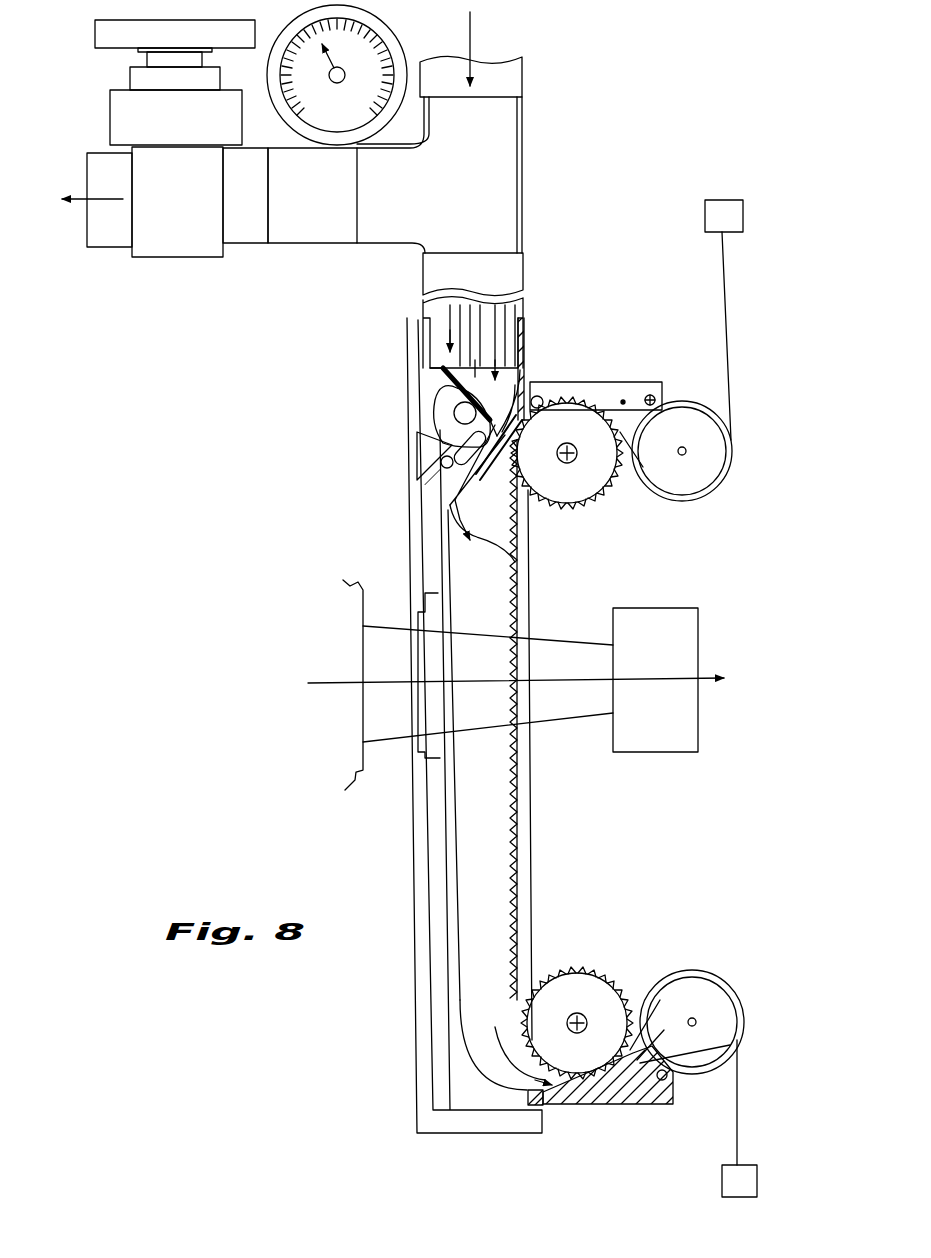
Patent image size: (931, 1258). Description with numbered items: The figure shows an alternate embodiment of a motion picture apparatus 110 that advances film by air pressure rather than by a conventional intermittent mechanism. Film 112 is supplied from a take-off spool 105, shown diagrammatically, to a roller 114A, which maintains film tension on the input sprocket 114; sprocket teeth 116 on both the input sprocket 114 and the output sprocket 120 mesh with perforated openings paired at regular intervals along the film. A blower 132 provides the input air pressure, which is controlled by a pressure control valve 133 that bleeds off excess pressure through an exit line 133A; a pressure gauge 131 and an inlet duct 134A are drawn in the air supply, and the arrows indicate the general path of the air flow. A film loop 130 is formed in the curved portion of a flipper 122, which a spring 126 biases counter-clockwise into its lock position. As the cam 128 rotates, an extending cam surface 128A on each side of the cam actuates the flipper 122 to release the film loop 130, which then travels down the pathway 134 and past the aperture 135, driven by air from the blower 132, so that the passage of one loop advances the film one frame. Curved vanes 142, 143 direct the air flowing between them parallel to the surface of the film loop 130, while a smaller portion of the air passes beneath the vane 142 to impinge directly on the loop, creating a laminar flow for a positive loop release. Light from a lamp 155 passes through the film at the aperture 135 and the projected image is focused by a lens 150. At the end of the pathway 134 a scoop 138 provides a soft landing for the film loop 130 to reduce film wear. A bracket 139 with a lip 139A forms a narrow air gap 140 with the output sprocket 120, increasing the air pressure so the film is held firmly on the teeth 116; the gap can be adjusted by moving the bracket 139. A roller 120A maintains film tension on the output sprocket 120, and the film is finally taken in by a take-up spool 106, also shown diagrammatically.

The take-off spool 105 is at (733, 200).
The take-up spool 106 is at (760, 1178).
The motion picture apparatus 110 is at (682, 100).
The film 112 is at (727, 372).
The input sprocket 114 is at (577, 485).
The roller 114A is at (690, 472).
The sprocket teeth 116 is at (560, 503).
The output sprocket 120 is at (582, 983).
The roller 120A is at (705, 990).
The flipper 122 is at (450, 508).
The spring 126 is at (433, 462).
The cam 128 is at (430, 417).
The extending cam surface 128A is at (500, 372).
The film loop 130 is at (480, 537).
The pressure gauge 131 is at (398, 35).
The blower 132 is at (523, 72).
The pressure control valve 133 is at (130, 50).
The exit line 133A is at (118, 247).
The pathway 134 is at (505, 787).
The inlet duct 134A is at (525, 276).
The aperture 135 is at (520, 638).
The scoop 138 is at (470, 1053).
The bracket 139 is at (605, 1105).
The lip 139A is at (633, 1056).
The air gap 140 is at (637, 1040).
The curved vane 142 is at (443, 373).
The curved vane 143 is at (523, 340).
The lens 150 is at (673, 752).
The lamp 155 is at (358, 772).